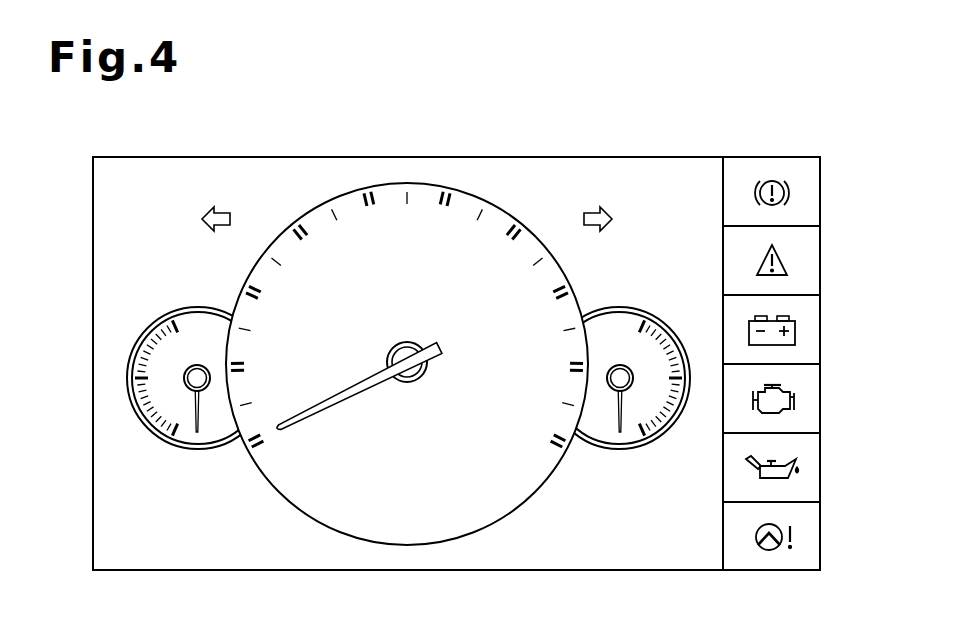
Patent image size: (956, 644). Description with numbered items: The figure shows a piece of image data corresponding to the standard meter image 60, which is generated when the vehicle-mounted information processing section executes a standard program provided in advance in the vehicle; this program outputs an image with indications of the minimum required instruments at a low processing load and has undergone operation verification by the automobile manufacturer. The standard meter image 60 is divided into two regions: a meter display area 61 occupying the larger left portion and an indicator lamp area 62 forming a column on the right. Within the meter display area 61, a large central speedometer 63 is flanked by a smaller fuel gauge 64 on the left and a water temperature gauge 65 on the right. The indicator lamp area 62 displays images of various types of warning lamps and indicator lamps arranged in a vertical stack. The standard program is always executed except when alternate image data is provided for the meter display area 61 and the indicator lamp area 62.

The standard meter image 60 is at (753, 155).
The meter display area 61 is at (93, 578).
The indicator lamp area 62 is at (820, 578).
The speedometer 63 is at (506, 211).
The fuel gauge 64 is at (149, 325).
The water temperature gauge 65 is at (668, 325).